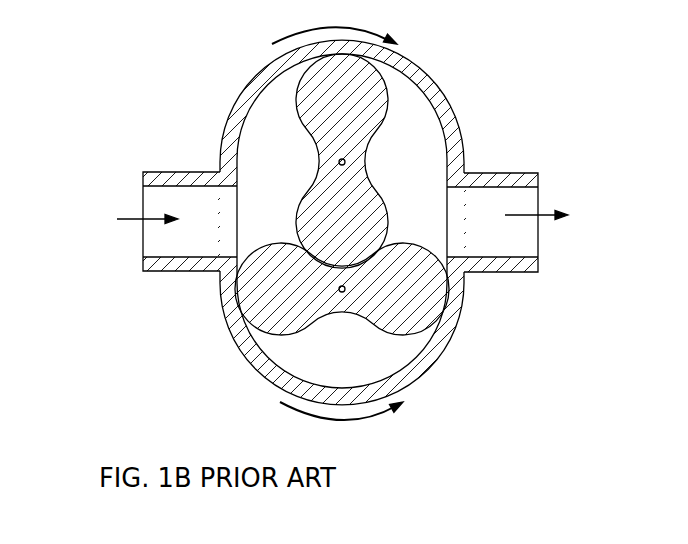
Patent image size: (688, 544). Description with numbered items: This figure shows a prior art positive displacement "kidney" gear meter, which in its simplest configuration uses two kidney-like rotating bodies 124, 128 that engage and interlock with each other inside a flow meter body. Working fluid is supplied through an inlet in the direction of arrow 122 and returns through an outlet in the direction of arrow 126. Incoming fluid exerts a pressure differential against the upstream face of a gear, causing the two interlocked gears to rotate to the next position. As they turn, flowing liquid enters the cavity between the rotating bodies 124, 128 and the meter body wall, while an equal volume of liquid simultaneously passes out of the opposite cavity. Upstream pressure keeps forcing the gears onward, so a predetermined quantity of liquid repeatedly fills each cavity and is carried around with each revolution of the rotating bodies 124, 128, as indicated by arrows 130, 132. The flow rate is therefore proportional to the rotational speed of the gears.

The working fluid supply flow arrow 122 is at (135, 219).
The kidney-like rotating body 124 is at (307, 97).
The fluid return flow arrow 126 is at (535, 213).
The kidney-like rotating body 128 is at (420, 290).
The rotation arrow 130 is at (334, 25).
The rotation arrow 132 is at (341, 424).